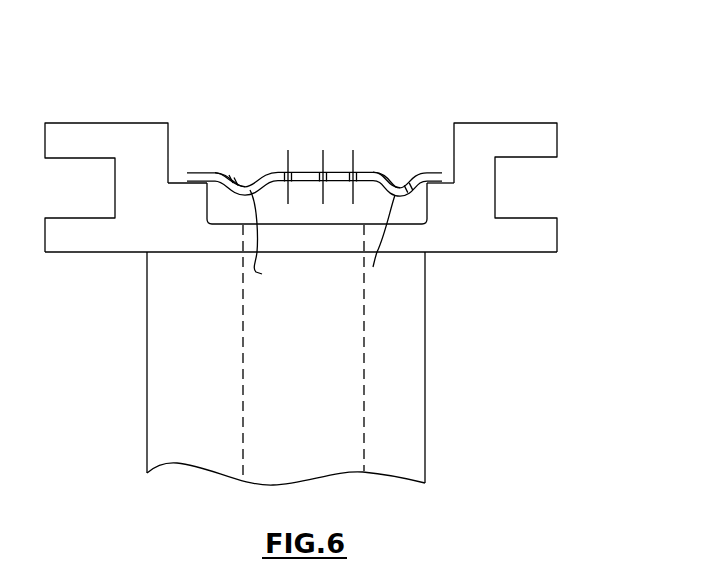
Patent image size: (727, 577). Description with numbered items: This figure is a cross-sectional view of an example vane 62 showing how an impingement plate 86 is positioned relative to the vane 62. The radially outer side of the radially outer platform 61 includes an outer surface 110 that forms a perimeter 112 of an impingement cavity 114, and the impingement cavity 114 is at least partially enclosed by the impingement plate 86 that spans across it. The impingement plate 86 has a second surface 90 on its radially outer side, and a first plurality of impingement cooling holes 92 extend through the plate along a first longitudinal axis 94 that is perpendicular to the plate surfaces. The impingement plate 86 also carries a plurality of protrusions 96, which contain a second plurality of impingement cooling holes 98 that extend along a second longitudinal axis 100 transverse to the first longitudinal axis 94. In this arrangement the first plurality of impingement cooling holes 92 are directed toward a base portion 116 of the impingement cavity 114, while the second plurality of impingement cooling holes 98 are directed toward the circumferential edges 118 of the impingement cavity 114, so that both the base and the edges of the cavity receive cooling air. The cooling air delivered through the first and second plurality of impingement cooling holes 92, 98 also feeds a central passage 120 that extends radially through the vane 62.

The radially outer platform 61 is at (460, 254).
The vane 62 is at (512, 325).
The impingement plate 86 is at (378, 122).
The second surface 90 is at (347, 171).
The first plurality of impingement cooling holes 92 is at (299, 171).
The first longitudinal axis 94 is at (285, 171).
The protrusions 96 is at (374, 267).
The second plurality of impingement cooling holes 98 is at (220, 208).
The second longitudinal axis 100 is at (246, 173).
The outer surface 110 is at (176, 182).
The perimeter 112 is at (428, 199).
The impingement cavity 114 is at (230, 215).
The base portion 116 is at (319, 215).
The circumferential edges 118 is at (208, 191).
The central passage 120 is at (276, 383).